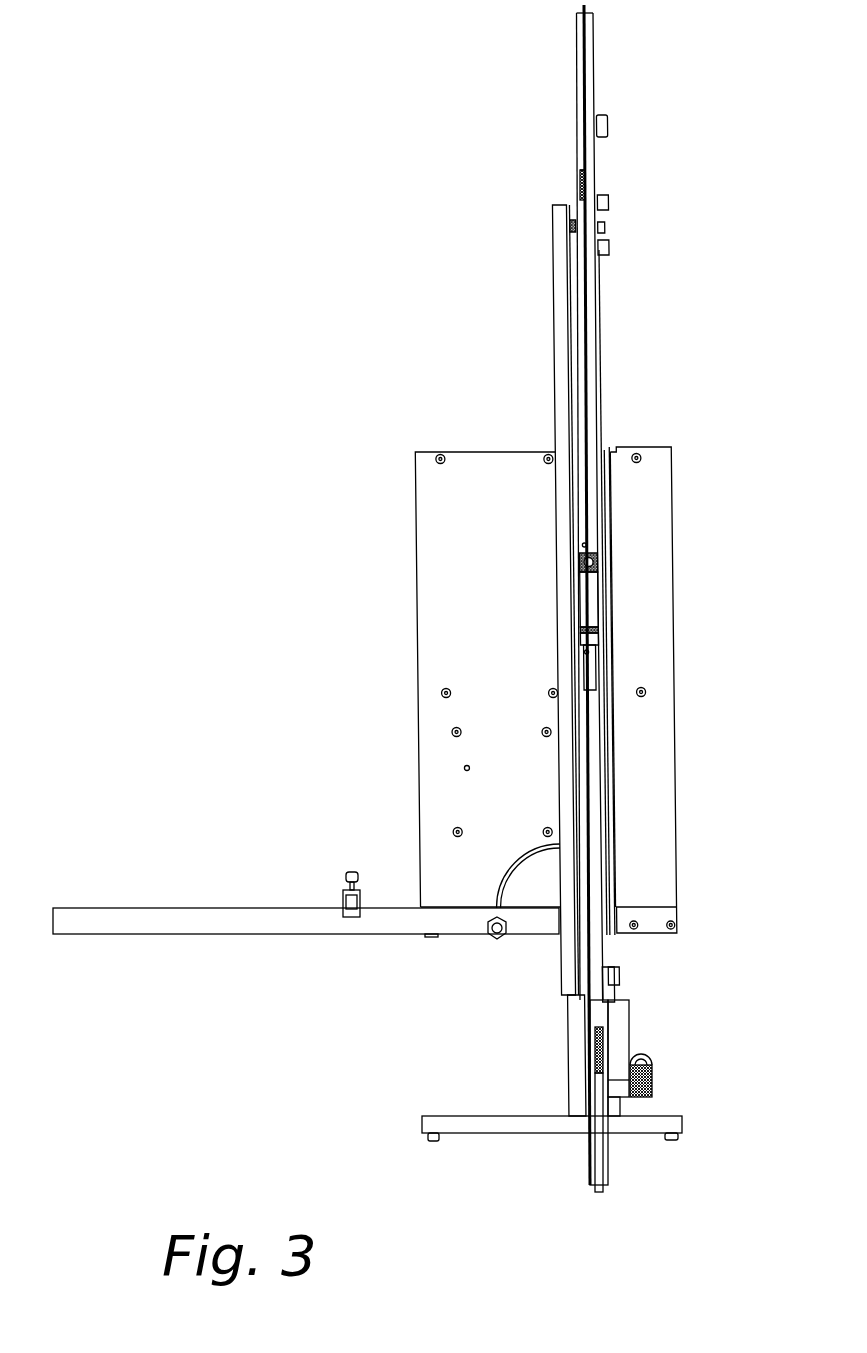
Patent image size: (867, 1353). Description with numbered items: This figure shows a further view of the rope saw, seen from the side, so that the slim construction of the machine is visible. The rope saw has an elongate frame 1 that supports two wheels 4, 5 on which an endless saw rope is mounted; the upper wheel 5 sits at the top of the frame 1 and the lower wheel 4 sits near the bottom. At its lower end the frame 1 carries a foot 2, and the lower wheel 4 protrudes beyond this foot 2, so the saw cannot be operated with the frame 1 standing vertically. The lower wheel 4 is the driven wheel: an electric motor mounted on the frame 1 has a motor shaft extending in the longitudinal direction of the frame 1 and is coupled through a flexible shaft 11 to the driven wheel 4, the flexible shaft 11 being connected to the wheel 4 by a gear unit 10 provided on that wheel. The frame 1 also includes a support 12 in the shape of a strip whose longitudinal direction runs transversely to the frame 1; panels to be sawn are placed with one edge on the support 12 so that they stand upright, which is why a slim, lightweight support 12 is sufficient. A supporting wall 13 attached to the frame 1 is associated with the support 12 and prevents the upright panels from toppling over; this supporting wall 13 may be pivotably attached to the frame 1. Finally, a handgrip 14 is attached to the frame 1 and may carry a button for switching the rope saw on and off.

The frame 1 is at (586, 615).
The foot 2 is at (497, 1132).
The wheel 4 is at (607, 1163).
The wheel 5 is at (594, 83).
The gear unit 10 is at (618, 1038).
The flexible shaft 11 is at (645, 1052).
The support 12 is at (178, 925).
The supporting wall 13 is at (546, 690).
The handgrip 14 is at (589, 616).